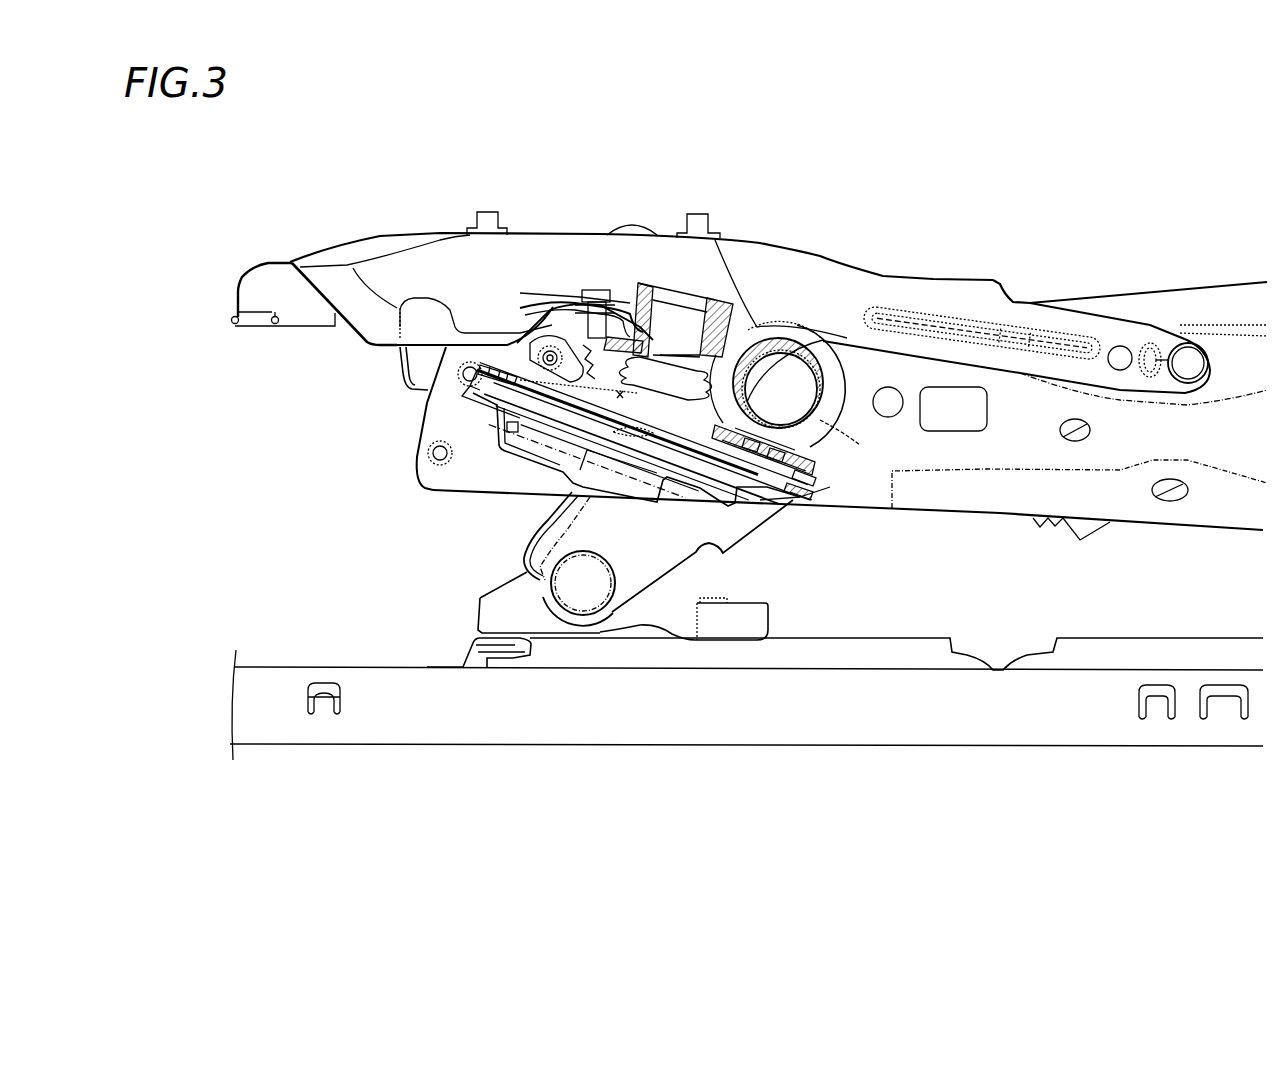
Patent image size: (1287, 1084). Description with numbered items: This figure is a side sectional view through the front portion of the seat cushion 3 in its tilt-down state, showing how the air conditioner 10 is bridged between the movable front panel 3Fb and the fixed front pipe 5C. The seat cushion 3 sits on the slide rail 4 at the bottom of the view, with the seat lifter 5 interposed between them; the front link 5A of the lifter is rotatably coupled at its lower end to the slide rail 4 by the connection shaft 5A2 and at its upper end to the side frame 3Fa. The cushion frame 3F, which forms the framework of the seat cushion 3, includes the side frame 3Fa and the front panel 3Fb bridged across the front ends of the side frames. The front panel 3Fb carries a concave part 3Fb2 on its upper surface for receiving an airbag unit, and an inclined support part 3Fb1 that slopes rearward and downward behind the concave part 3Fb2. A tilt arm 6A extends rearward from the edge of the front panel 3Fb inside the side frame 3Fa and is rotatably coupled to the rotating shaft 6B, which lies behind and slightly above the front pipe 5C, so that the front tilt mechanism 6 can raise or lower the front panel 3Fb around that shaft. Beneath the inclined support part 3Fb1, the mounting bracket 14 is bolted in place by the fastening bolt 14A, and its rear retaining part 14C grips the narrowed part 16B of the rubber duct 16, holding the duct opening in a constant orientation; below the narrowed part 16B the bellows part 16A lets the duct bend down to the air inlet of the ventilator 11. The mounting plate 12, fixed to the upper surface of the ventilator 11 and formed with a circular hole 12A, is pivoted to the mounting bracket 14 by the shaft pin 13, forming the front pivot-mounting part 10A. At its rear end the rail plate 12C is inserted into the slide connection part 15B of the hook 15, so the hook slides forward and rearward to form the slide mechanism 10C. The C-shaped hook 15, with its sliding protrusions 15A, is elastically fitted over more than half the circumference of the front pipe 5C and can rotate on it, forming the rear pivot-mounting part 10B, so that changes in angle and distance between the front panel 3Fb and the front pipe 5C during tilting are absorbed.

The cushion frame 3F is at (423, 172).
The seat cushion 3 is at (750, 344).
The front panel 3Fb is at (397, 260).
The concave part 3Fb2 is at (472, 330).
The inclined support part 3Fb1 is at (618, 250).
The side frame 3Fa is at (1163, 303).
The tilt arm 6A is at (883, 288).
The rotating shaft 6B is at (1188, 360).
The front tilt mechanism 6 is at (373, 387).
The ventilator 11 is at (540, 433).
The mounting plate 12 is at (497, 404).
The circular hole 12A is at (573, 453).
The rail plate 12C is at (807, 473).
The shaft pin 13 is at (548, 345).
The front pivot-mounting part 10A is at (562, 359).
The mounting bracket 14 is at (566, 300).
The fastening bolt 14A is at (597, 282).
The retaining part 14C is at (660, 307).
The duct 16 is at (708, 298).
The narrowed part 16B is at (643, 320).
The bellows part 16A is at (754, 337).
The hook 15 is at (797, 330).
The rear pivot-mounting part 10B is at (778, 383).
The sliding protrusion 15A is at (837, 343).
The slide connection part 15B is at (793, 473).
The seat lifter 5 is at (498, 537).
The connection shaft 5A2 is at (573, 583).
The front link 5A is at (688, 533).
The front pipe 5C is at (838, 420).
The air conditioner 10 is at (780, 506).
The slide mechanism 10C is at (862, 542).
The slide rail 4 is at (428, 663).